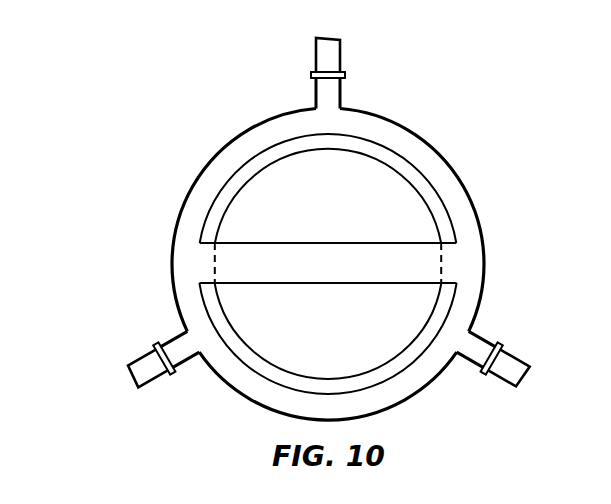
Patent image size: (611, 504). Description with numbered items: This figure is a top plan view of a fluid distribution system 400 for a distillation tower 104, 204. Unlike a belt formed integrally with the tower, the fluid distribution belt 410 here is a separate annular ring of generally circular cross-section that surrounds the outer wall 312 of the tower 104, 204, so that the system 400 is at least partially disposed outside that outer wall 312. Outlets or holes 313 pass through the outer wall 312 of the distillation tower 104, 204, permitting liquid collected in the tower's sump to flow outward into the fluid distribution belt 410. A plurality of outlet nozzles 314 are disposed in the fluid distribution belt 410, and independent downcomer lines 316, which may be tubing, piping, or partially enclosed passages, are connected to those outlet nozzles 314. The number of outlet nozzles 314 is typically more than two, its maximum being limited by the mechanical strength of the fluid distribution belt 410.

The fluid distribution system 400 is at (175, 104).
The fluid distribution belt 410 is at (434, 147).
The distillation tower 104 is at (342, 264).
The distillation tower 204 is at (342, 264).
The outer wall 312 is at (358, 373).
The outlets or holes 313 is at (213, 260).
The outlet nozzles 314 is at (315, 93).
The downcomer lines 316 is at (341, 50).